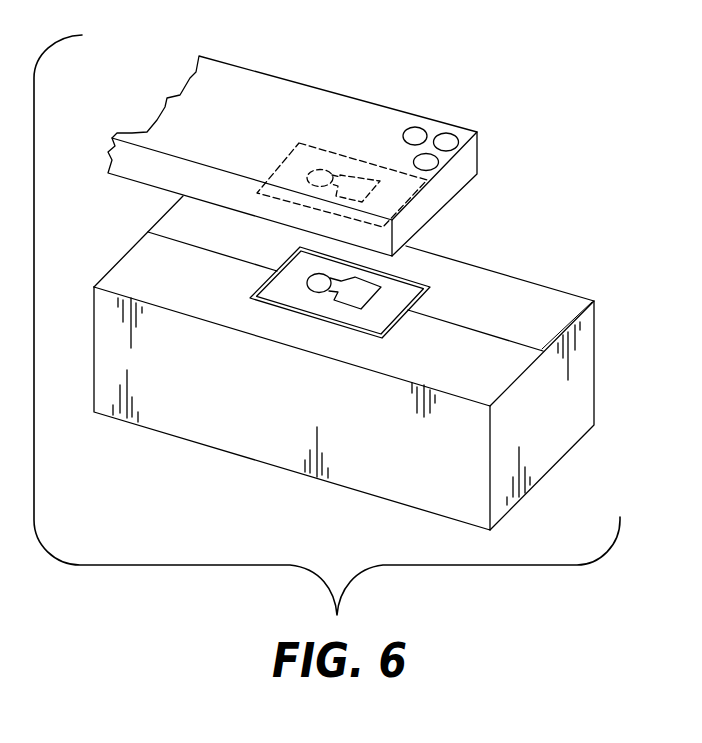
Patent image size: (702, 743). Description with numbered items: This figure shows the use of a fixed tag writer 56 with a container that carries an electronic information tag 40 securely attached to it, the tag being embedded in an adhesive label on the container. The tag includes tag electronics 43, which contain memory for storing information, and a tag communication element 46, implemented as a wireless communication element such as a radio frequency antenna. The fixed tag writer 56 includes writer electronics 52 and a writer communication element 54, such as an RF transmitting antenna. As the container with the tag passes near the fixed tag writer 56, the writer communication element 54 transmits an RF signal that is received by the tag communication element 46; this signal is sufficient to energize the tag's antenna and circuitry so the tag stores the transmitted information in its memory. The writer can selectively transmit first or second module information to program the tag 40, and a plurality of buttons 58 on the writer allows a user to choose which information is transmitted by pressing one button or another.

The electronic information tag 40 is at (412, 284).
The tag electronics 43 is at (345, 306).
The tag communication element 46 is at (316, 291).
The writer electronics 52 is at (375, 168).
The writer communication element 54 is at (322, 174).
The fixed tag writer 56 is at (365, 153).
The buttons 58 is at (436, 160).